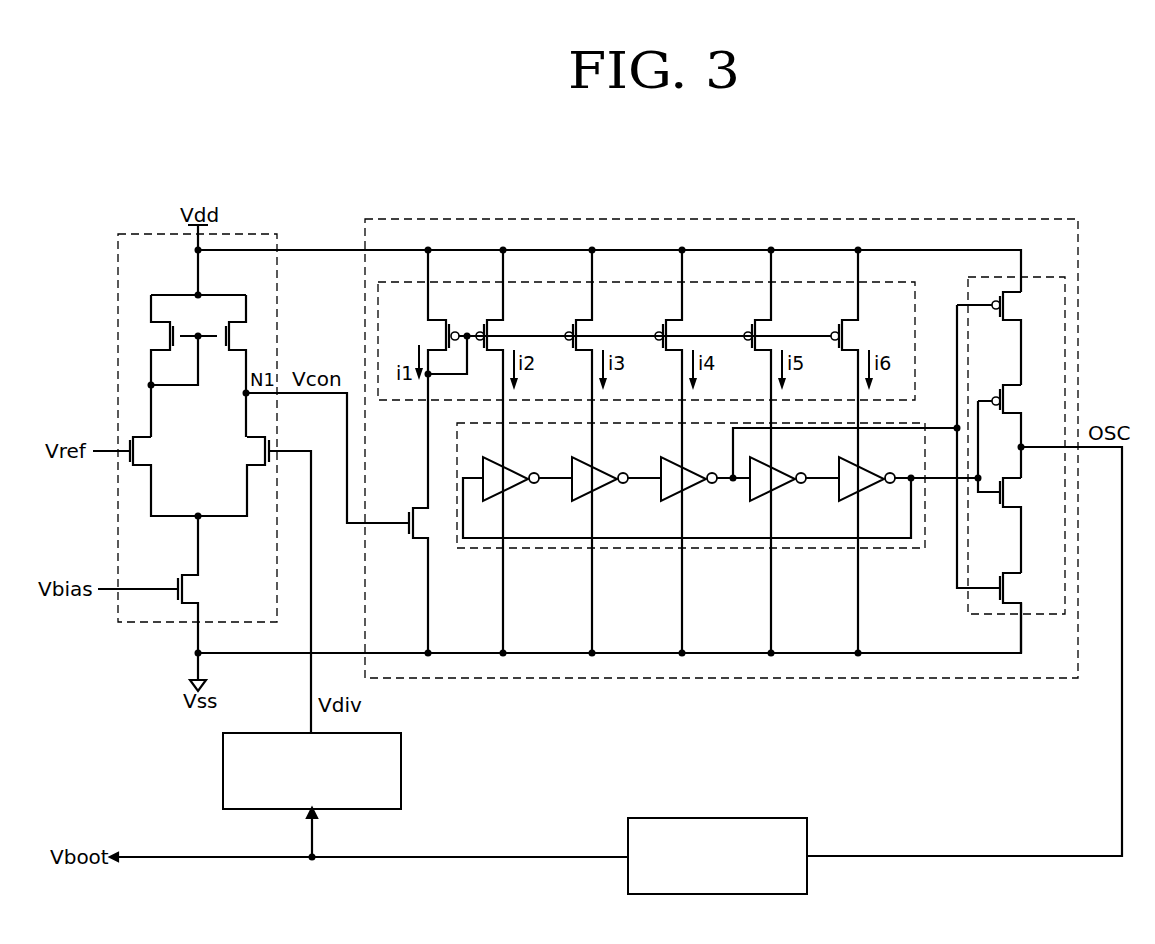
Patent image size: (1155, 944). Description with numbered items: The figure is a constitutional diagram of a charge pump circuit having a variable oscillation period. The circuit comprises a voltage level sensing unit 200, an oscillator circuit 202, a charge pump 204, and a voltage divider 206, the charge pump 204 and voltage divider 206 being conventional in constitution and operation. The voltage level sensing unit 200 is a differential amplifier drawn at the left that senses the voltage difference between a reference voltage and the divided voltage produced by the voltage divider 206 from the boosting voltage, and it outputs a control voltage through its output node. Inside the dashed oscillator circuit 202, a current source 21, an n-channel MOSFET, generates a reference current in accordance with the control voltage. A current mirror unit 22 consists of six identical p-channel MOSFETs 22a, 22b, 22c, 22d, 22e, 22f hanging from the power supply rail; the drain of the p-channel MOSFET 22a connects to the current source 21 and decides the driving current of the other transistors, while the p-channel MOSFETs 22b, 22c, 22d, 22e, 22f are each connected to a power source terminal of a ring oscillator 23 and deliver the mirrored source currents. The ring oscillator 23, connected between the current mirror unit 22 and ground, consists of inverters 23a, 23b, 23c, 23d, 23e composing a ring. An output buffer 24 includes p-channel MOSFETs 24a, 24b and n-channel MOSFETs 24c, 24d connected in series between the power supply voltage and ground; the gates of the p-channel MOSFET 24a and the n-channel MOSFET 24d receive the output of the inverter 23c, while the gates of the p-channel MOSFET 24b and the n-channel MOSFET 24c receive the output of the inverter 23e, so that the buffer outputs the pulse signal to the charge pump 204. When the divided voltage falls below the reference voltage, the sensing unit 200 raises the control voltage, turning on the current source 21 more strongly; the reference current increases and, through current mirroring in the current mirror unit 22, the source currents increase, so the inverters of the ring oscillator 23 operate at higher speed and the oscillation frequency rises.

The voltage level sensing unit 200 is at (237, 234).
The oscillator circuit 202 is at (969, 219).
The charge pump 204 is at (718, 817).
The voltage divider 206 is at (402, 771).
The current source 21 is at (434, 513).
The current mirror unit 22 is at (893, 283).
The p-channel MOSFET 22a is at (449, 312).
The p-channel MOSFET 22b is at (511, 451).
The p-channel MOSFET 22c is at (599, 451).
The p-channel MOSFET 22d is at (690, 451).
The p-channel MOSFET 22e is at (779, 451).
The p-channel MOSFET 22f is at (863, 451).
The ring oscillator 23 is at (883, 549).
The inverter 23a is at (513, 474).
The inverter 23b is at (602, 474).
The inverter 23c is at (691, 474).
The inverter 23d is at (780, 474).
The inverter 23e is at (869, 474).
The output buffer 24 is at (1025, 277).
The p-channel MOSFET 24a is at (1011, 338).
The p-channel MOSFET 24b is at (1021, 431).
The n-channel MOSFET 24c is at (1031, 525).
The n-channel MOSFET 24d is at (1032, 613).